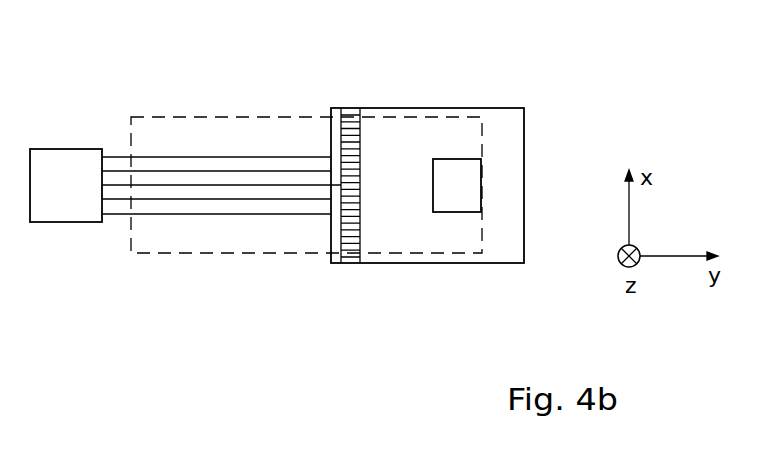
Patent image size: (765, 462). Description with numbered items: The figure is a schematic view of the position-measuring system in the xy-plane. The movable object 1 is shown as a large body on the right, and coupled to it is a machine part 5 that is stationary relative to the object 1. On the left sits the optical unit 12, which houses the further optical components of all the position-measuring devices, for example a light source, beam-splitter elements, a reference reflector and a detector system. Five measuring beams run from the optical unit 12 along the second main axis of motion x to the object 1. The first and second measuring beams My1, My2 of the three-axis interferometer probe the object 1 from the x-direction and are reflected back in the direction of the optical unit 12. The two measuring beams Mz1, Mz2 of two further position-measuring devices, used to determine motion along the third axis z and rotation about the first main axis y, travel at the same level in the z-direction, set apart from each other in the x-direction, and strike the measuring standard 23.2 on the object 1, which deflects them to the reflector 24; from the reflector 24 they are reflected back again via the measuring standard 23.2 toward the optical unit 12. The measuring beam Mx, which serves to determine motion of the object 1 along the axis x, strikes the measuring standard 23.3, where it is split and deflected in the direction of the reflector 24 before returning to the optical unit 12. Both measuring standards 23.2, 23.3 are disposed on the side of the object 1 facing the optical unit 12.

The object 1 is at (509, 257).
The machine part 5 is at (472, 185).
The optical unit 12 is at (48, 217).
The reflector 24 is at (313, 137).
The measuring standard 23.2 is at (335, 112).
The measuring standard 23.3 is at (351, 255).
The measuring beam Mz2 is at (146, 152).
The measuring beam My2 is at (257, 171).
The measuring beam Mx is at (205, 185).
The measuring beam My1 is at (253, 200).
The measuring beam Mz1 is at (147, 214).